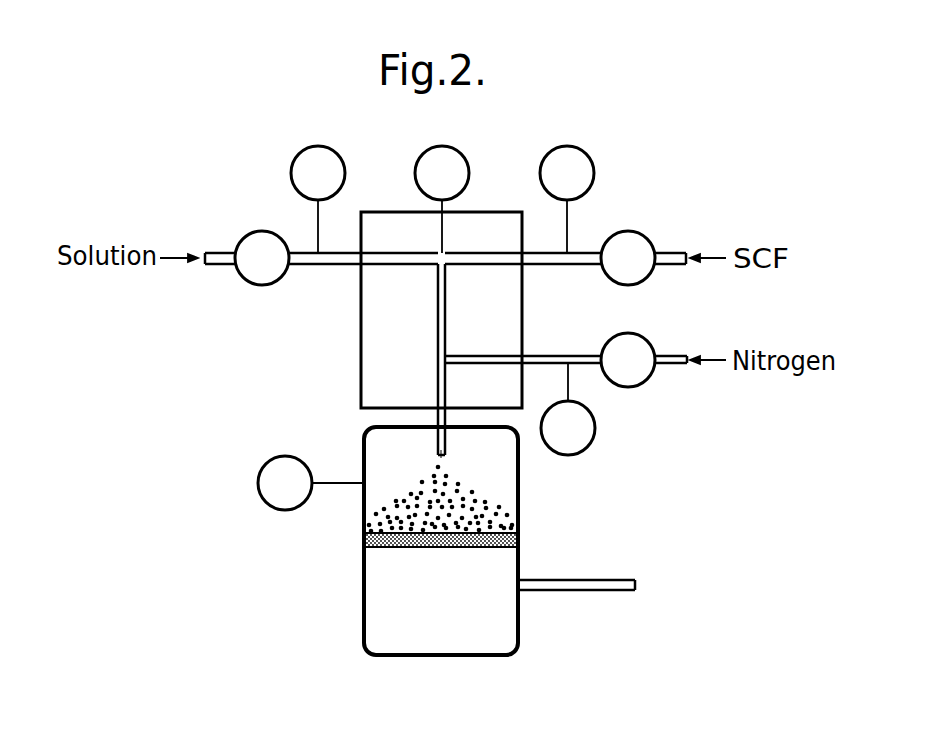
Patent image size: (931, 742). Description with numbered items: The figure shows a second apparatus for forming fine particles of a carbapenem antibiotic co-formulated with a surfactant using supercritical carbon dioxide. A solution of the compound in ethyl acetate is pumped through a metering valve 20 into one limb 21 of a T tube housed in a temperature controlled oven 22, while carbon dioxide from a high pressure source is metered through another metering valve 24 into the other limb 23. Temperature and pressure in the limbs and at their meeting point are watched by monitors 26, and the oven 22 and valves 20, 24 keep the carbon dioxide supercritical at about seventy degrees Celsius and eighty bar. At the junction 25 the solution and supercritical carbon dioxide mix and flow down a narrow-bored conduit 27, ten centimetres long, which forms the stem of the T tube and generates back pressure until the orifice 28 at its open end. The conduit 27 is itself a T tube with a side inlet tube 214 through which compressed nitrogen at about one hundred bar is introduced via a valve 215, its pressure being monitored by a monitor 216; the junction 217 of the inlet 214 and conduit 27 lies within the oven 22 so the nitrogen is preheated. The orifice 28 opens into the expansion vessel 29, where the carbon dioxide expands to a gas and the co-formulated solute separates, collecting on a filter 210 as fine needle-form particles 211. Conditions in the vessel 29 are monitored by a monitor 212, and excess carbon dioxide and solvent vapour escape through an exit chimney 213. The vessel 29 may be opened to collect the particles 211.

The metering valve 20 is at (241, 239).
The limb of T tube 21 is at (335, 267).
The temperature controlled oven 22 is at (500, 211).
The limb of T tube 23 is at (544, 266).
The metering valve 24 is at (631, 243).
The junction 25 is at (438, 257).
The monitors 26 is at (296, 178).
The conduit 27 is at (438, 314).
The orifice 28 is at (443, 458).
The vessel 29 is at (364, 626).
The filter 210 is at (364, 541).
The particles 211 is at (487, 512).
The monitor 212 is at (262, 484).
The exit chimney 213 is at (598, 592).
The side inlet tube 214 is at (548, 355).
The valve 215 is at (640, 374).
The monitor 216 is at (585, 438).
The junction 217 is at (438, 357).